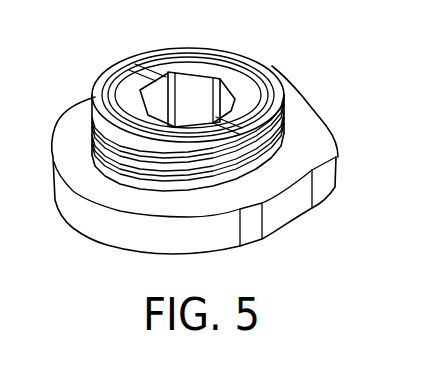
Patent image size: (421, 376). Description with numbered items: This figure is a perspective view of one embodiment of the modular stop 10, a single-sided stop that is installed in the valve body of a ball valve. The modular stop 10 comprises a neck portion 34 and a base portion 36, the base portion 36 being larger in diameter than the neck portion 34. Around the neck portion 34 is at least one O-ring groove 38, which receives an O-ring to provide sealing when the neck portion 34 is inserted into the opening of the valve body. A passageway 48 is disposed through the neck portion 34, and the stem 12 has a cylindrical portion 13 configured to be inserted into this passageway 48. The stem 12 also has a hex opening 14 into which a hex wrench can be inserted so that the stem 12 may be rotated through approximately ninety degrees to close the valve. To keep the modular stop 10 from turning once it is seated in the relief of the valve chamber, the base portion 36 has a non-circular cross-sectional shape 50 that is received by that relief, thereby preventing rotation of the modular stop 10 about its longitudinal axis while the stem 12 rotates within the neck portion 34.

The modular stop 10 is at (151, 18).
The stem 12 is at (243, 51).
The cylindrical portion 13 is at (196, 92).
The hex opening 14 is at (235, 92).
The neck portion 34 is at (284, 72).
The base portion 36 is at (307, 134).
The O-ring groove 38 is at (248, 190).
The passageway 48 is at (123, 77).
The cross-sectional shape 50 is at (115, 223).